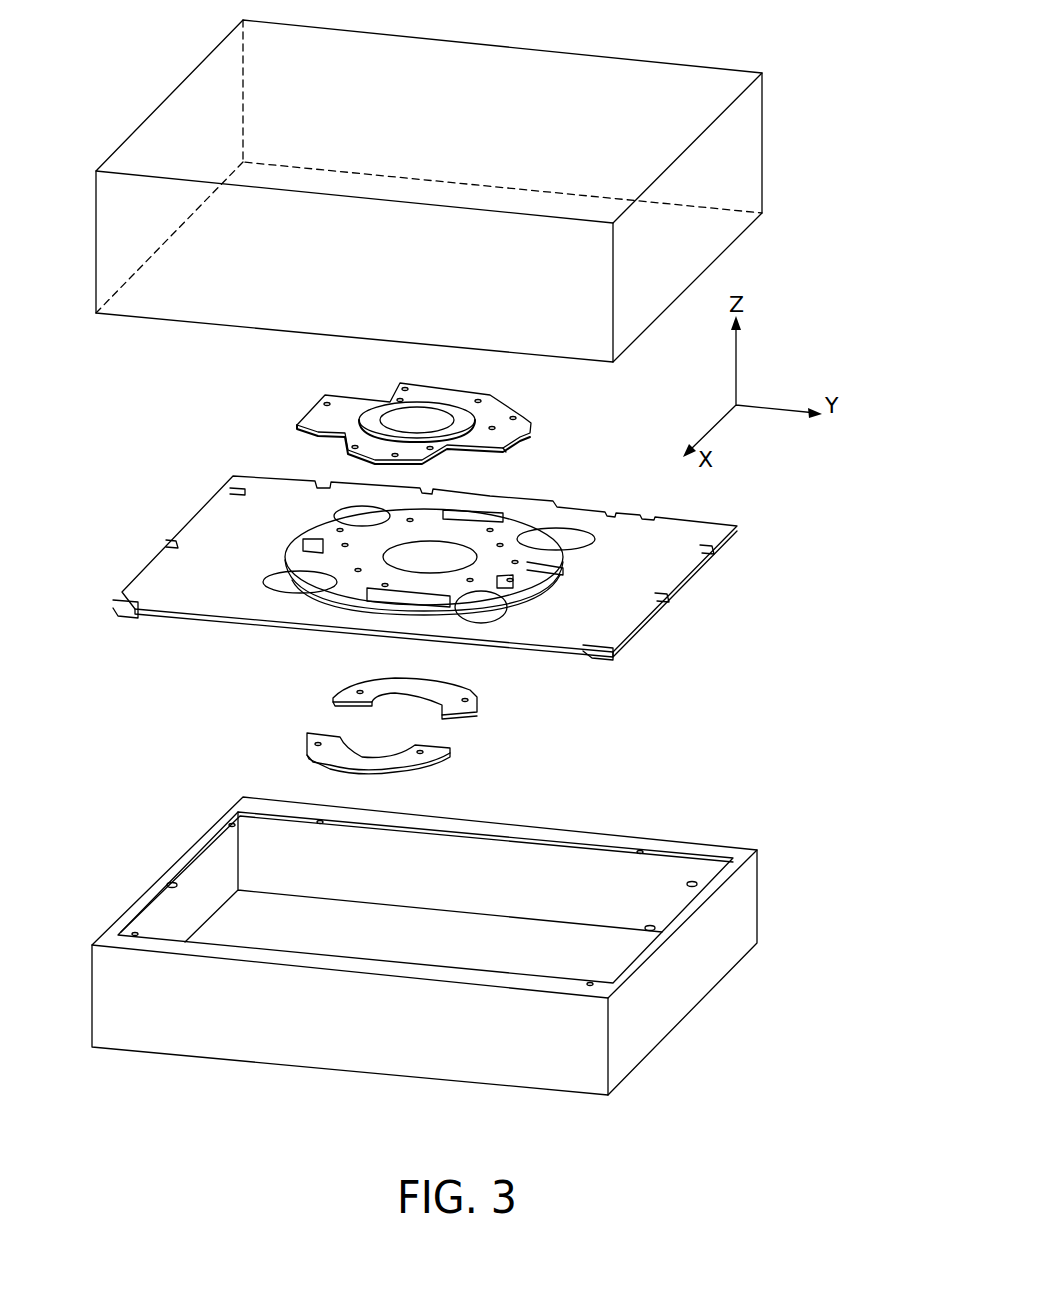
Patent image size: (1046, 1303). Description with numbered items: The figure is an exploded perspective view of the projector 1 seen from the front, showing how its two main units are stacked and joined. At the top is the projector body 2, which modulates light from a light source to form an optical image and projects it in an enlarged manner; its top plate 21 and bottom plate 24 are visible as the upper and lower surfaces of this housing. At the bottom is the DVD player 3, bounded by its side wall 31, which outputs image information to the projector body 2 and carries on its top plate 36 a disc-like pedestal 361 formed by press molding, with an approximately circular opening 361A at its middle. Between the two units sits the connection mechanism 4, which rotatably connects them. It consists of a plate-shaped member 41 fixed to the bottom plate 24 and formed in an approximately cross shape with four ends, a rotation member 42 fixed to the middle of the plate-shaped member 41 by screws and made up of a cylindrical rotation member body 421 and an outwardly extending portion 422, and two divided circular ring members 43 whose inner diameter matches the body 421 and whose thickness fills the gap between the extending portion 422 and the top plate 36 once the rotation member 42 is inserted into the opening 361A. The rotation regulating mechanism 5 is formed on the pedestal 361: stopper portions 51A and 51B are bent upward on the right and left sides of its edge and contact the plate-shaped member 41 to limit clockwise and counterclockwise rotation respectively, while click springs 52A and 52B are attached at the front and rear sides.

The projector 1 is at (769, 48).
The projector body 2 is at (774, 123).
The top plate of upper case 21 is at (744, 183).
The bottom plate 24 is at (176, 306).
The DVD player 3 is at (777, 854).
The side wall of lower case 31 is at (748, 935).
The top plate 36 is at (620, 627).
The pedestal 361 is at (312, 588).
The opening 361A is at (382, 562).
The connection mechanism 4 is at (292, 402).
The plate-shaped member 41 is at (500, 405).
The rotation member 42 is at (346, 418).
The rotation member body 421 is at (401, 417).
The extending portion 422 is at (447, 449).
The divided circular ring members 43 is at (463, 762).
The rotation regulating mechanism 5 is at (533, 513).
The stopper portion 51A is at (518, 588).
The stopper portion 51B is at (292, 542).
The click spring 52A is at (400, 602).
The click spring 52B is at (438, 503).